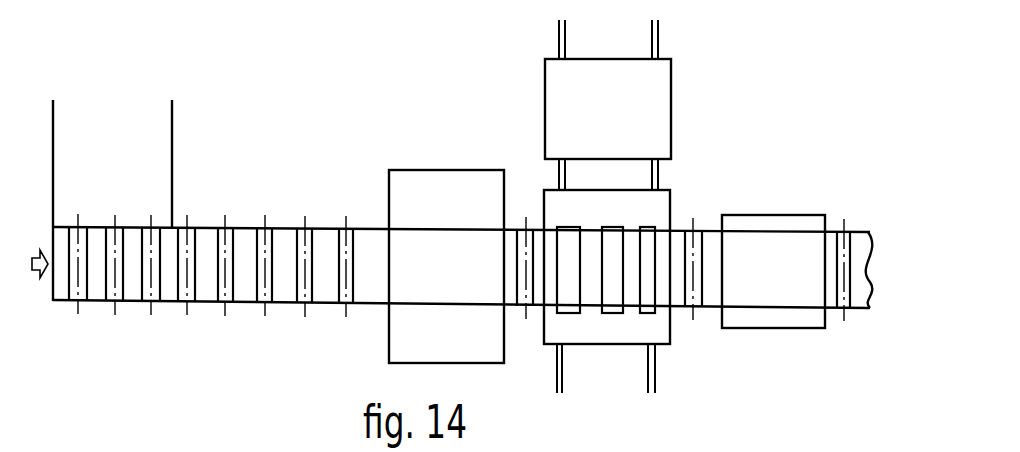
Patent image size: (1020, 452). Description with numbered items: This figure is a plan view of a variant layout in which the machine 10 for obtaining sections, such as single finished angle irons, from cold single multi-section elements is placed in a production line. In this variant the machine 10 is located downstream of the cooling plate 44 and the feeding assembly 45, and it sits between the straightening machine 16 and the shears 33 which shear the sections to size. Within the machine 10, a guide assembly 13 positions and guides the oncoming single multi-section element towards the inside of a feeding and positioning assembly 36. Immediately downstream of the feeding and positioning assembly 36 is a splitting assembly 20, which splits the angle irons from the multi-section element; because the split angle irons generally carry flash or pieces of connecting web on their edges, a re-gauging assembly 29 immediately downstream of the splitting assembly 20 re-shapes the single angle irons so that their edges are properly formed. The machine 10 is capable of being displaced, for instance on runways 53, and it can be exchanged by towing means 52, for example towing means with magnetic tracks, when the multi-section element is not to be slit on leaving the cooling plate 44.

The cooling plate 44 is at (118, 176).
The feeding assembly 45 is at (193, 298).
The straightening machine 16 is at (450, 202).
The guide assembly 13 is at (528, 214).
The towing means 52 is at (658, 84).
The machine 10 is at (612, 180).
The runways 53 is at (658, 173).
The feeding and positioning assembly 36 is at (570, 306).
The splitting assembly 20 is at (613, 302).
The re-gauging assembly 29 is at (651, 308).
The shears 33 is at (773, 318).